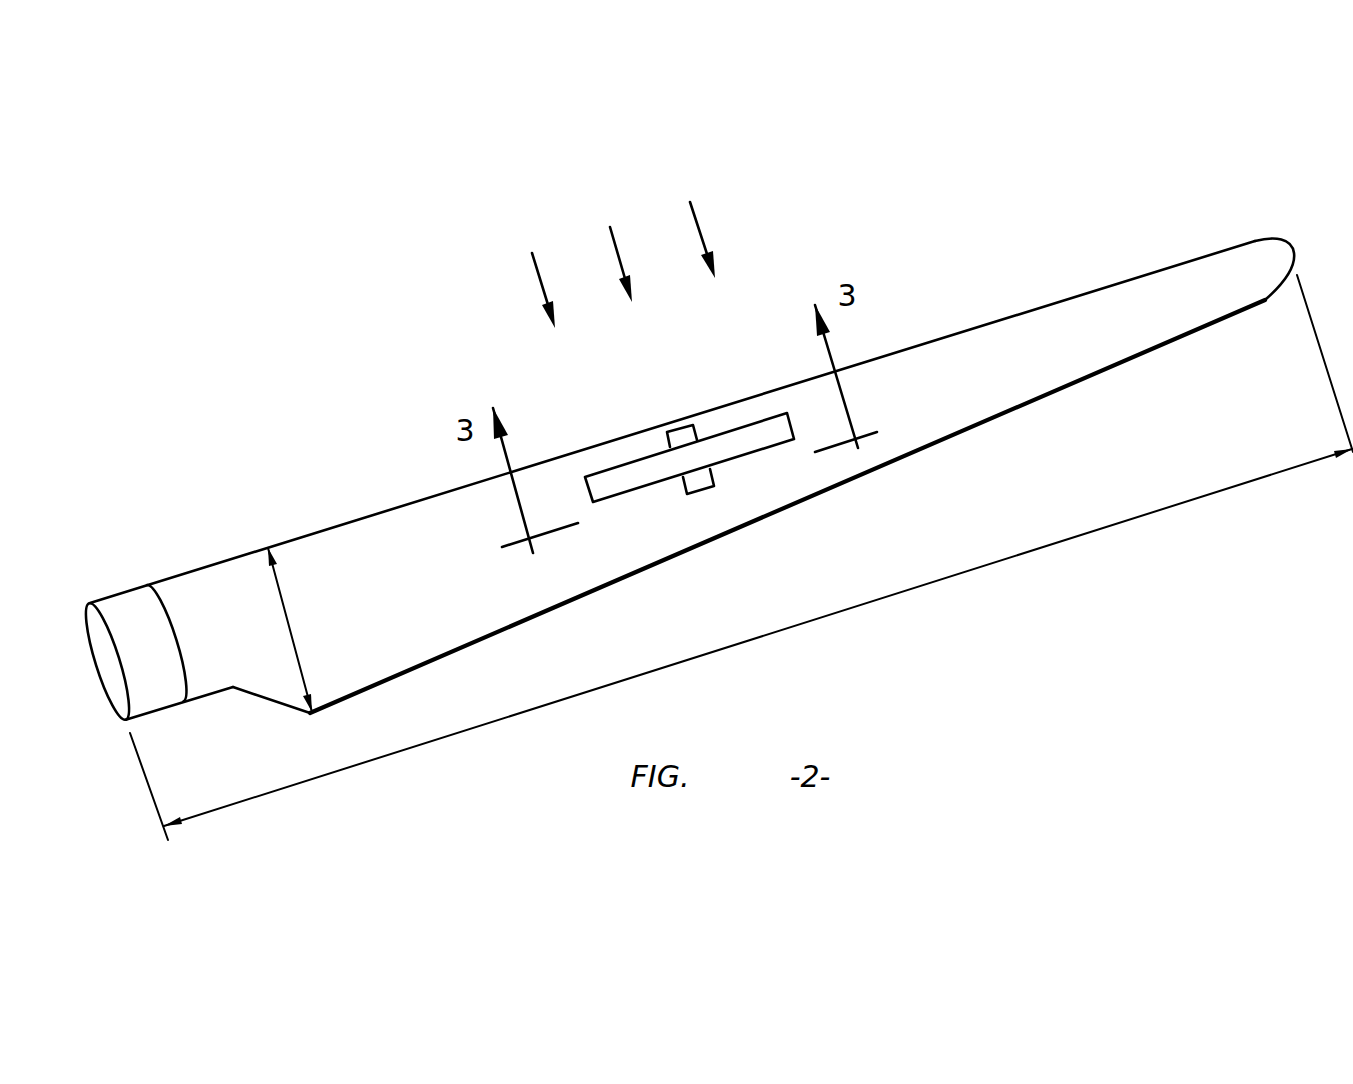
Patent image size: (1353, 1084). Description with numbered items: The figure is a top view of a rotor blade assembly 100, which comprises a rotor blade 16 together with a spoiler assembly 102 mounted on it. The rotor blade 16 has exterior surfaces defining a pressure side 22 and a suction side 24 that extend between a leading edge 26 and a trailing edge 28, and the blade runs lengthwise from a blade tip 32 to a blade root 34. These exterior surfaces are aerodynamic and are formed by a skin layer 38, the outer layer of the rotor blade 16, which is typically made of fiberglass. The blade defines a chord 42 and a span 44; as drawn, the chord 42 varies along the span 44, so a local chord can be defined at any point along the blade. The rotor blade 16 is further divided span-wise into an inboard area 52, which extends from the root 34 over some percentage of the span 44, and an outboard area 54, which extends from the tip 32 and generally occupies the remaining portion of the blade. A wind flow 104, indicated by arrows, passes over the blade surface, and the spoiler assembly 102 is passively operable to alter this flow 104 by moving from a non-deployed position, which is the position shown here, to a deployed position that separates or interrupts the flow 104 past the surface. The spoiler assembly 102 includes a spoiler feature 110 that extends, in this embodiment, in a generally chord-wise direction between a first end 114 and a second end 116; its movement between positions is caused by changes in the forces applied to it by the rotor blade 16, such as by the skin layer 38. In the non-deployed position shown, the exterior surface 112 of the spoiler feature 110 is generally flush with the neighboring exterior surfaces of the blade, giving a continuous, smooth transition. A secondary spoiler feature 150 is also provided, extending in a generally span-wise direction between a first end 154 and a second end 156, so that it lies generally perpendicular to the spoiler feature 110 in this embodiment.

The rotor blade 16 is at (343, 379).
The pressure side 22 is at (252, 700).
The suction side 24 is at (352, 563).
The leading edge 26 is at (312, 532).
The trailing edge 28 is at (438, 658).
The blade tip 32 is at (1293, 250).
The blade root 34 is at (115, 677).
The skin layer 38 is at (742, 505).
The chord 42 is at (290, 617).
The span 44 is at (953, 573).
The inboard area 52 is at (411, 537).
The outboard area 54 is at (1000, 330).
The rotor blade assembly 100 is at (406, 236).
The spoiler assembly 102 is at (730, 412).
The flow 104 is at (617, 248).
The spoiler feature 110 is at (677, 490).
The exterior surface 112 is at (713, 472).
The first end 114 is at (682, 423).
The second end 116 is at (708, 508).
The secondary spoiler feature 150 is at (633, 448).
The first end 154 is at (583, 490).
The second end 156 is at (792, 428).